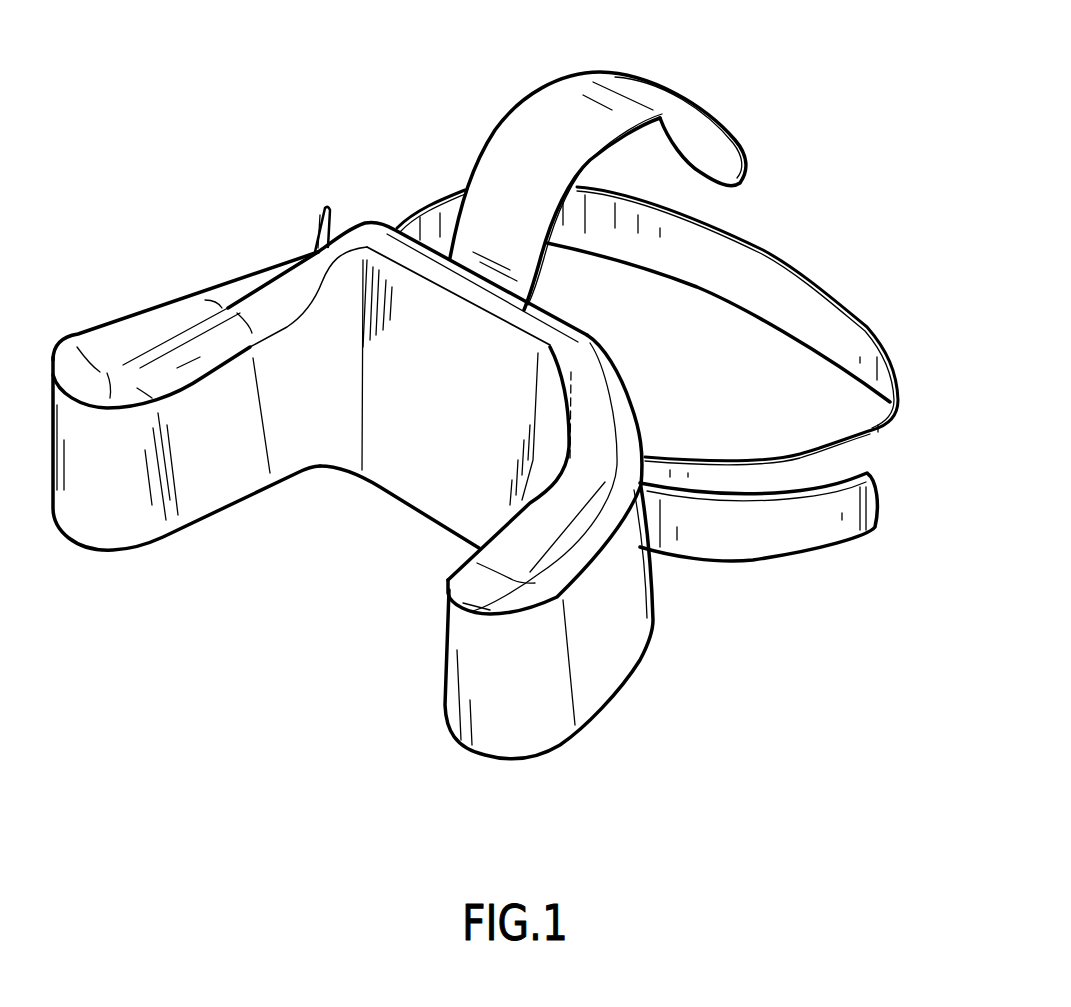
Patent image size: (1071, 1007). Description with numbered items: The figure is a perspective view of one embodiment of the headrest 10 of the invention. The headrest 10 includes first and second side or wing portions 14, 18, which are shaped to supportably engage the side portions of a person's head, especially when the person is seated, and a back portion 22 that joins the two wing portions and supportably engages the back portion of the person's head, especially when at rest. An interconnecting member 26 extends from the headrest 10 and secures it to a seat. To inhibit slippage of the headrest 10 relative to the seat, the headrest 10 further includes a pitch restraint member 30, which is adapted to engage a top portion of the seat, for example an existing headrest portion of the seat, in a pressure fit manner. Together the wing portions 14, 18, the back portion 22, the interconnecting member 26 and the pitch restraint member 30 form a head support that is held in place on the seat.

The headrest 10 is at (364, 592).
The first side or wing portion 14 is at (207, 377).
The second side or wing portion 18 is at (497, 524).
The back portion 22 is at (497, 357).
The interconnecting member 26 is at (885, 461).
The pitch restraint member 30 is at (687, 102).